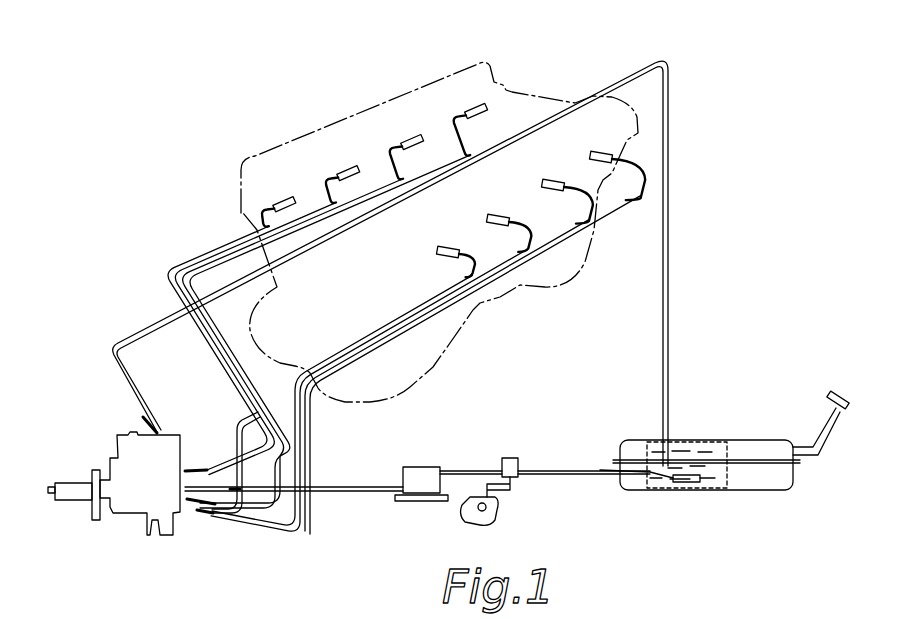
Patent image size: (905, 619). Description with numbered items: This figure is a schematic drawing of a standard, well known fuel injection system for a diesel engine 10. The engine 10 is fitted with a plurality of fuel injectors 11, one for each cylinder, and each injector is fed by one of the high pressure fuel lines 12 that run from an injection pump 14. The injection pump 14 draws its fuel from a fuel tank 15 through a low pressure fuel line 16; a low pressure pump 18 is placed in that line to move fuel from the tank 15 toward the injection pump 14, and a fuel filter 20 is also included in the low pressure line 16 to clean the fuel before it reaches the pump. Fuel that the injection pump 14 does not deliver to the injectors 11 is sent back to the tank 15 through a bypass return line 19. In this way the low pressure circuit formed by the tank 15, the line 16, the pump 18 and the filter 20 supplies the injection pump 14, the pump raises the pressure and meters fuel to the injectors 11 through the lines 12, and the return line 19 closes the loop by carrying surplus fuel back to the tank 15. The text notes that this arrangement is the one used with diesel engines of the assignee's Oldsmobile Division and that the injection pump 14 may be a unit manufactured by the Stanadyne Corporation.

The diesel engine 10 is at (438, 68).
The fuel injectors 11 is at (472, 110).
The high pressure fuel lines 12 is at (235, 262).
The injection pump 14 is at (130, 457).
The fuel tank 15 is at (743, 447).
The low pressure fuel line 16 is at (332, 493).
The low pressure pump 18 is at (510, 458).
The bypass return line 19 is at (135, 333).
The fuel filter 20 is at (421, 477).